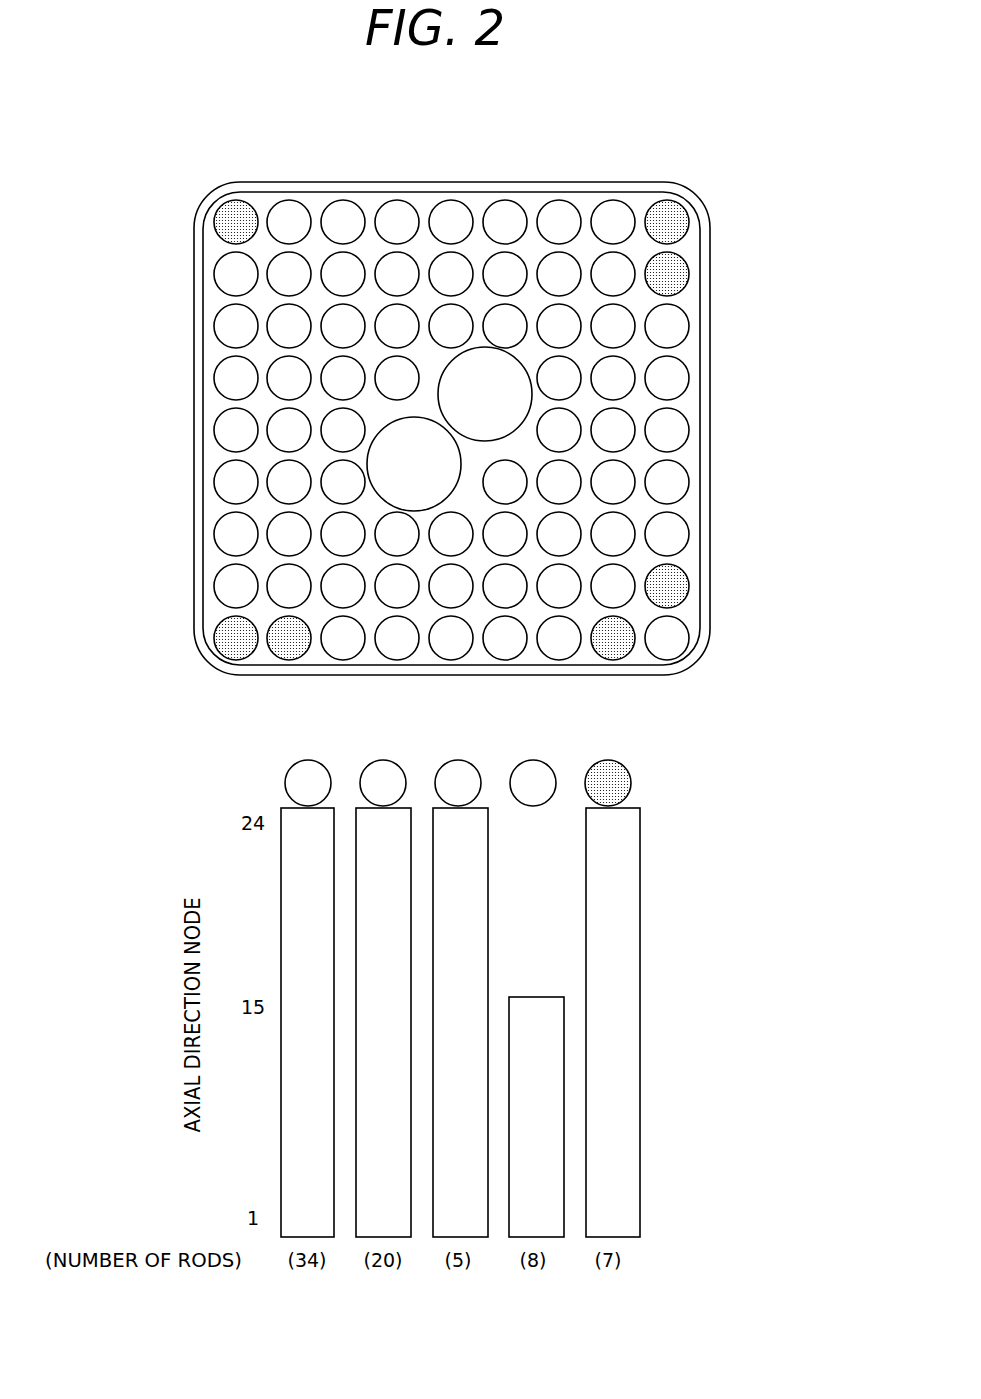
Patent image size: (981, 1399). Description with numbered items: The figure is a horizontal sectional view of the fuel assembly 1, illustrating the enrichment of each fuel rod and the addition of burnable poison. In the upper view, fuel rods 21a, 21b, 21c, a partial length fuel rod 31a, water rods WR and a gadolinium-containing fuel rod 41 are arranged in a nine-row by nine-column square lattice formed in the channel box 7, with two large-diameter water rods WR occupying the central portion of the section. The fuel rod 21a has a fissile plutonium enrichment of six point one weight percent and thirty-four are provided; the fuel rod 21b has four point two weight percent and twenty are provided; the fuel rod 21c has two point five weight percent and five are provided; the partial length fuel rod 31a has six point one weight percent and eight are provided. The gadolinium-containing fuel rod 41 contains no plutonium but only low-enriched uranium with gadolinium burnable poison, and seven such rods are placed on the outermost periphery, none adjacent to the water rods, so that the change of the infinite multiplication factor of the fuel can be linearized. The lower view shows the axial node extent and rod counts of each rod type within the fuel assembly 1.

The fuel assembly 1 is at (362, 163).
The channel box 7 is at (710, 427).
The fuel rod 21a is at (520, 262).
The fuel rod 21b is at (690, 325).
The fuel rod 21c is at (215, 275).
The partial length fuel rod 31a is at (270, 603).
The gadolinium-containing fuel rod 41 is at (688, 223).